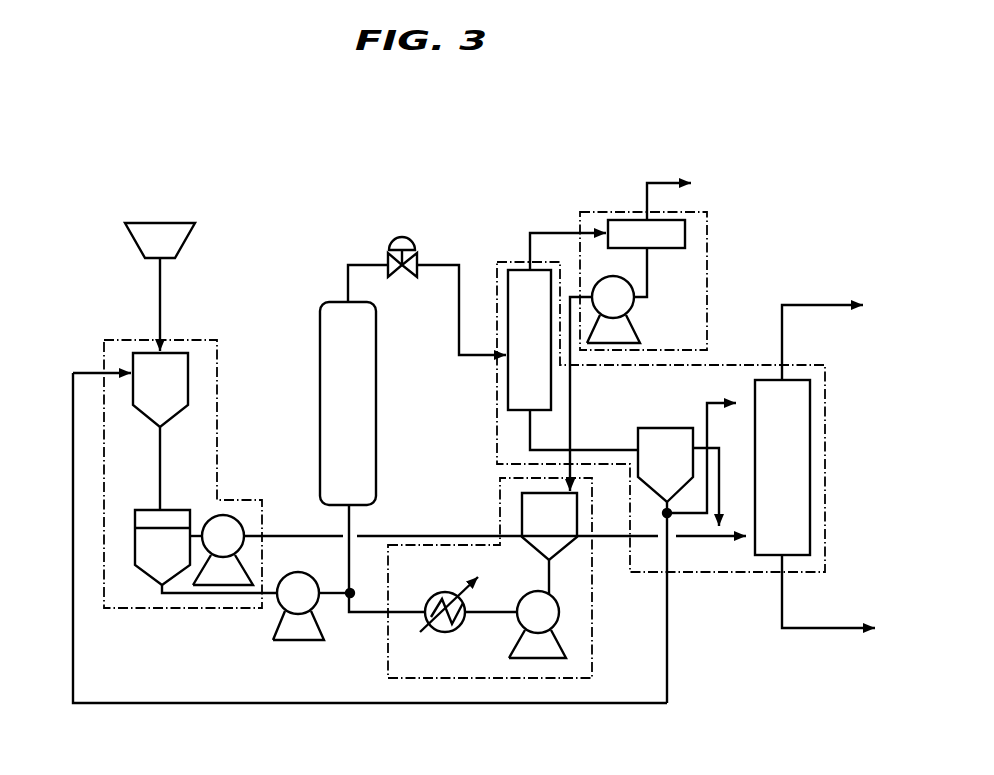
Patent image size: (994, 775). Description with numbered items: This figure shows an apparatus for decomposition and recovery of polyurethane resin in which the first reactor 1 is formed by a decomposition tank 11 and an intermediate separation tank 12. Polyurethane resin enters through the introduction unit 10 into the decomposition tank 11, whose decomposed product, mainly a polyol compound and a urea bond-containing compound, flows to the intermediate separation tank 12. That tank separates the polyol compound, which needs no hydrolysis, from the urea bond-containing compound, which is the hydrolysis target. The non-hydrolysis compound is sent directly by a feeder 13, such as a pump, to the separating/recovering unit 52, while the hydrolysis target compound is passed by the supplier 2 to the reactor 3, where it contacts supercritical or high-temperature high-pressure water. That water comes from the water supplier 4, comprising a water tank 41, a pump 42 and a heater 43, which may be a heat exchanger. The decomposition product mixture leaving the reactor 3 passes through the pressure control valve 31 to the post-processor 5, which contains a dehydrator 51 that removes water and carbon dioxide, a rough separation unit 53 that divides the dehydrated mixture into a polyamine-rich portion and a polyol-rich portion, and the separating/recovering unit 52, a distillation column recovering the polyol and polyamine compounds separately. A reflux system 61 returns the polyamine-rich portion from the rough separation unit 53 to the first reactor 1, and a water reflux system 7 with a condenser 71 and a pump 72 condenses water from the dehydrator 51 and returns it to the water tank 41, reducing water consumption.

The first reactor 1 is at (219, 447).
The supplier 2 is at (287, 601).
The reactor 3 is at (322, 393).
The water supplier 4 is at (386, 645).
The post-processor 5 is at (812, 362).
The water reflux system 7 is at (607, 205).
The introduction unit 10 is at (185, 240).
The decomposition tank 11 is at (188, 368).
The intermediate separation tank 12 is at (142, 548).
The feeder 13 is at (237, 521).
The pressure control valve 31 is at (414, 243).
The water tank 41 is at (568, 524).
The pump 42 is at (559, 612).
The heater 43 is at (441, 592).
The dehydrator 51 is at (520, 392).
The separating/recovering unit 52 is at (808, 432).
The rough separation unit 53 is at (666, 428).
The reflux system 61 is at (668, 655).
The condenser 71 is at (665, 249).
The pump 72 is at (627, 336).